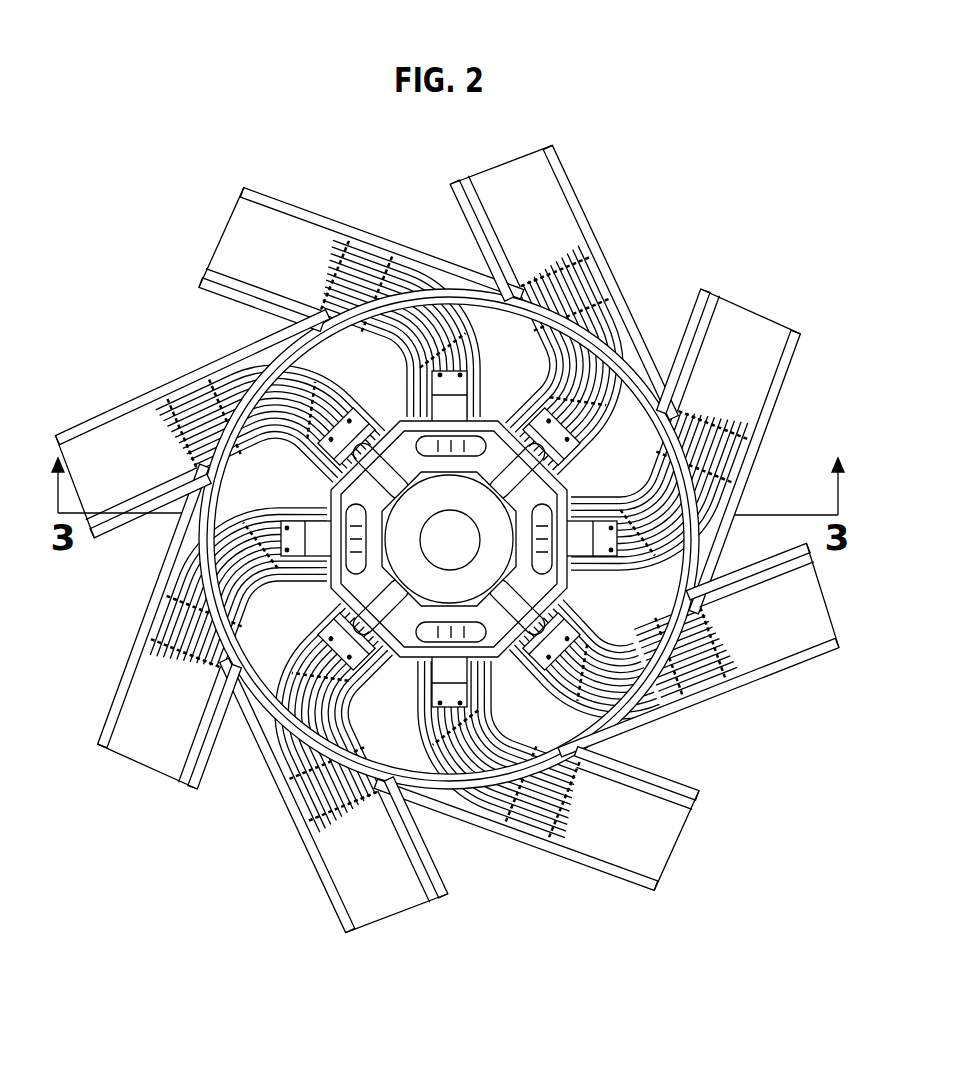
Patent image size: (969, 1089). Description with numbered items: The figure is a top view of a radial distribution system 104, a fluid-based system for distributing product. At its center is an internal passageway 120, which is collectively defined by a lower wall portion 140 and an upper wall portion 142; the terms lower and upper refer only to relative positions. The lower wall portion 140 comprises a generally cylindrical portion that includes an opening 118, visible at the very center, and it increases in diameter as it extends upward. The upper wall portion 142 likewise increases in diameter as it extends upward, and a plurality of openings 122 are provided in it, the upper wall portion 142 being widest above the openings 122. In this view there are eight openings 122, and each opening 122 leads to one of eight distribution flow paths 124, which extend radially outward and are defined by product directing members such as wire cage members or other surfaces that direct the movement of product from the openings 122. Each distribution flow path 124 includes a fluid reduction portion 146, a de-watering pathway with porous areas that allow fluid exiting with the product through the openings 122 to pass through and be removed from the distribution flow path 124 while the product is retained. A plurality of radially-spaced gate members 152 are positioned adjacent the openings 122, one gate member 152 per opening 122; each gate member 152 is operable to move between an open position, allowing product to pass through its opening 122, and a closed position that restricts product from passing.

The radial distribution system 104 is at (217, 98).
The opening 118 is at (513, 538).
The internal passageway 120 is at (520, 460).
The openings 122 is at (410, 405).
The distribution flow path 124 is at (267, 227).
The lower wall portion 140 is at (470, 410).
The upper wall portion 142 is at (530, 500).
The fluid reduction portion 146 is at (540, 415).
The gate member 152 is at (500, 275).